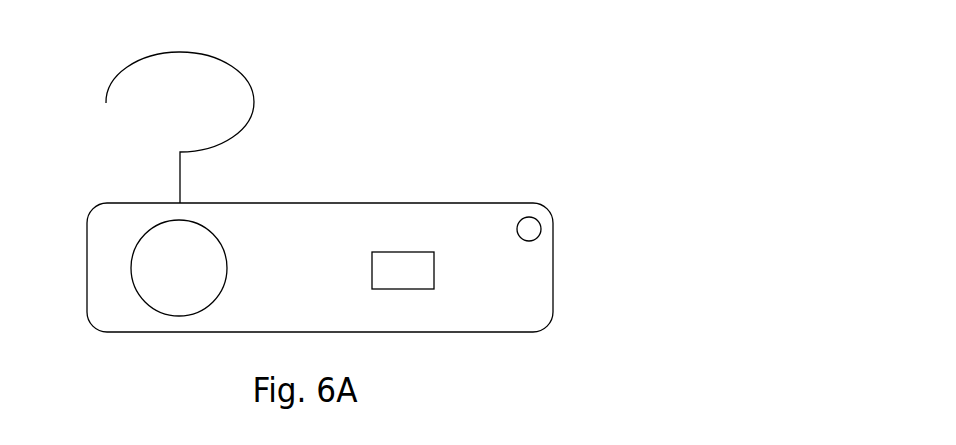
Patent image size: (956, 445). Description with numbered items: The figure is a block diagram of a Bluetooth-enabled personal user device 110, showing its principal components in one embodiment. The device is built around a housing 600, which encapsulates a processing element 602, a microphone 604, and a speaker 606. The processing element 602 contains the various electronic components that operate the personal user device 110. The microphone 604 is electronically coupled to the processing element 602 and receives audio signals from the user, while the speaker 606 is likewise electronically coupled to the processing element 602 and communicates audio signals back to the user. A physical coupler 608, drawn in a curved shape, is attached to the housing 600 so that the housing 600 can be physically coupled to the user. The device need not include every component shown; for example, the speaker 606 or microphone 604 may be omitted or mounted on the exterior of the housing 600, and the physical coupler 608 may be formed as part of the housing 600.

The personal user device 110 is at (552, 80).
The housing 600 is at (530, 288).
The processing element 602 is at (405, 262).
The microphone 604 is at (531, 219).
The speaker 606 is at (148, 252).
The physical coupler 608 is at (127, 62).